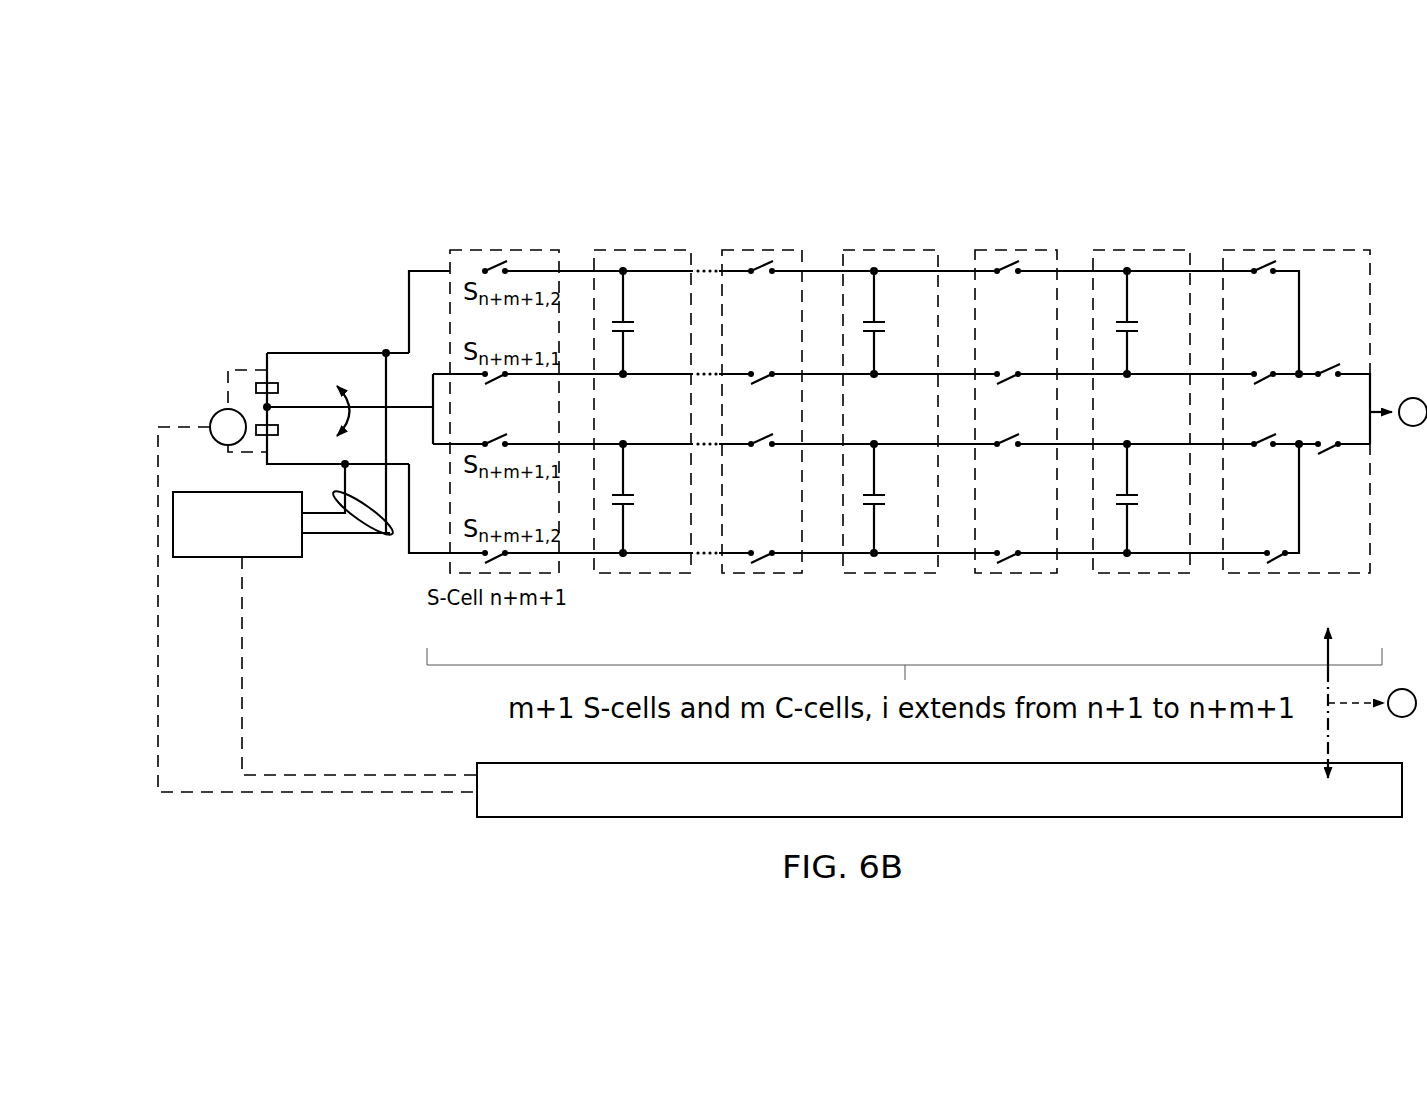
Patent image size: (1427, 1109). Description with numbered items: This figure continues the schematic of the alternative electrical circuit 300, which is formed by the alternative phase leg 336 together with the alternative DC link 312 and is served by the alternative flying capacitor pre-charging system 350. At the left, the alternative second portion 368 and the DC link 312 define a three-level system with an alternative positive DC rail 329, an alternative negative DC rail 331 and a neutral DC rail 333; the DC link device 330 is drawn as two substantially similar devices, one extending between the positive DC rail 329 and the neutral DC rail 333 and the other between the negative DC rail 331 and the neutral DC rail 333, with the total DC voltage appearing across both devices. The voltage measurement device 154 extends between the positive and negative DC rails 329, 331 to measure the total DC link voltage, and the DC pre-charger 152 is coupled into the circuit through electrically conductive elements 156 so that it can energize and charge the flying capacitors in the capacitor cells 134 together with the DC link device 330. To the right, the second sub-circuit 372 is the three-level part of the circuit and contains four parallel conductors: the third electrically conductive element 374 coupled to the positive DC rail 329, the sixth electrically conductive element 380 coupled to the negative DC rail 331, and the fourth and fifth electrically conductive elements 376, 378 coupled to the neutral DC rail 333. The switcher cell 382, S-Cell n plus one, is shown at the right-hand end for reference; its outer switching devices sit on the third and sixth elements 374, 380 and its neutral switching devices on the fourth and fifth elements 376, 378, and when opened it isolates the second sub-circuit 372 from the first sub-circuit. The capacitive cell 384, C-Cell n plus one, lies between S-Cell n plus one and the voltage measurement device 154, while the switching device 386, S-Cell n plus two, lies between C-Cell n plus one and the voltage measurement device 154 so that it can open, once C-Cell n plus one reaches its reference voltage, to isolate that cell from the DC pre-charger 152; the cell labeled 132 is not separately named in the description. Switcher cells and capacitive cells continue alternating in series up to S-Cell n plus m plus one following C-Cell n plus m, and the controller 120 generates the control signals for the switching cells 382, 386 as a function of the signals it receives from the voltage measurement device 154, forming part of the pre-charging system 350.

The electrical circuit 300 is at (958, 171).
The second sub-circuit 372 is at (829, 212).
The third electrically conductive element 374 is at (885, 263).
The fourth electrically conductive element 376 is at (891, 384).
The fifth electrically conductive element 378 is at (882, 432).
The sixth electrically conductive element 380 is at (855, 561).
The switcher cell 382 is at (1262, 252).
The capacitive cell 384 is at (765, 252).
The switching device 386 is at (640, 260).
The S-cell n+2 132 is at (1020, 260).
The capacitor cells 134 is at (1180, 252).
The phase leg 336 is at (1093, 225).
The second portion 368 is at (367, 276).
The DC link 312 is at (307, 343).
The positive DC rail 329 is at (350, 353).
The DC link device 330 is at (258, 363).
The negative DC rail 331 is at (314, 465).
The neutral DC rail 333 is at (423, 418).
The voltage measurement device 154 is at (213, 414).
The electrically conductive elements 156 is at (392, 535).
The DC pre-charger 152 is at (200, 558).
The flying capacitor pre-charging system 350 is at (232, 475).
The controller 120 is at (946, 722).